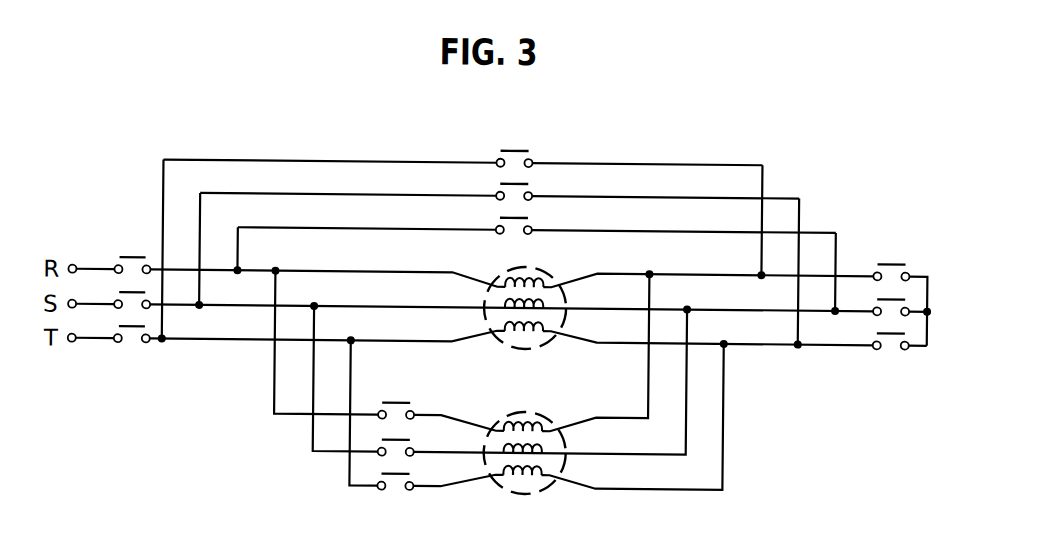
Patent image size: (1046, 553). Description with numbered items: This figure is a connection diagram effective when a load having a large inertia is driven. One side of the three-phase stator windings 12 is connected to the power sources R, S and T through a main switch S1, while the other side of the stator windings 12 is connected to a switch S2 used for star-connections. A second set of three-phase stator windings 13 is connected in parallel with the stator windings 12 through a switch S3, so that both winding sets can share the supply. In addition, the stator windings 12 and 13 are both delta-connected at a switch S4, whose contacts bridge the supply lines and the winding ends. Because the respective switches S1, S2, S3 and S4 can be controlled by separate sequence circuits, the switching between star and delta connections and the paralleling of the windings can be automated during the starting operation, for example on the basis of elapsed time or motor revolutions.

The 3-phase stator windings 12 is at (556, 347).
The 3-phase stator windings 13 is at (504, 407).
The main switch S1 is at (139, 242).
The switch for star-connections S2 is at (897, 248).
The switch S3 is at (401, 389).
The switch S4 is at (520, 138).